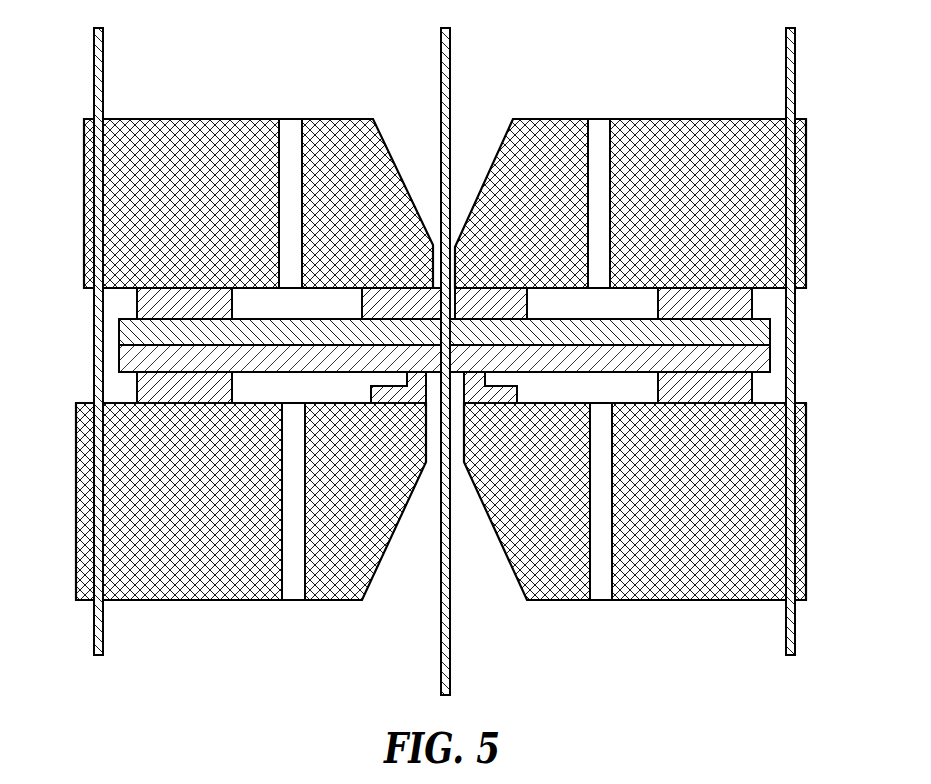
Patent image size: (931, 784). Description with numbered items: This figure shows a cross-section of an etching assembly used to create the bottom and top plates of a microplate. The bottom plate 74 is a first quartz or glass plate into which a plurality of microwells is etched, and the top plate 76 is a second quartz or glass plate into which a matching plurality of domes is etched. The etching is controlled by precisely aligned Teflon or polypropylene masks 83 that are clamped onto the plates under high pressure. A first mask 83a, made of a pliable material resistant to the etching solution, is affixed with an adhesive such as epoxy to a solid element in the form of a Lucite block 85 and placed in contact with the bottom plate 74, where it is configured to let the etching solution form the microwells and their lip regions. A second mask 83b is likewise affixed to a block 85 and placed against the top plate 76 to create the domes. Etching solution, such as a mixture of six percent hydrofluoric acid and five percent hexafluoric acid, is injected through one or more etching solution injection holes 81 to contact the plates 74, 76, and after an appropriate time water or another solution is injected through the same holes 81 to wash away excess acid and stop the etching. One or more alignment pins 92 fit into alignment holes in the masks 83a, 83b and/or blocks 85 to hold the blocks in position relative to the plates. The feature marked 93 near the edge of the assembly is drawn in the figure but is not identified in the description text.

The bottom plate 74 is at (138, 358).
The top plate 76 is at (138, 333).
The etching solution injection hole 81 is at (290, 130).
The mask 83 is at (363, 303).
The first mask 83a is at (517, 391).
The second mask 83b is at (515, 305).
The Lucite block 85 is at (218, 594).
The alignment pin 92 is at (104, 47).
The gap 93 is at (796, 290).